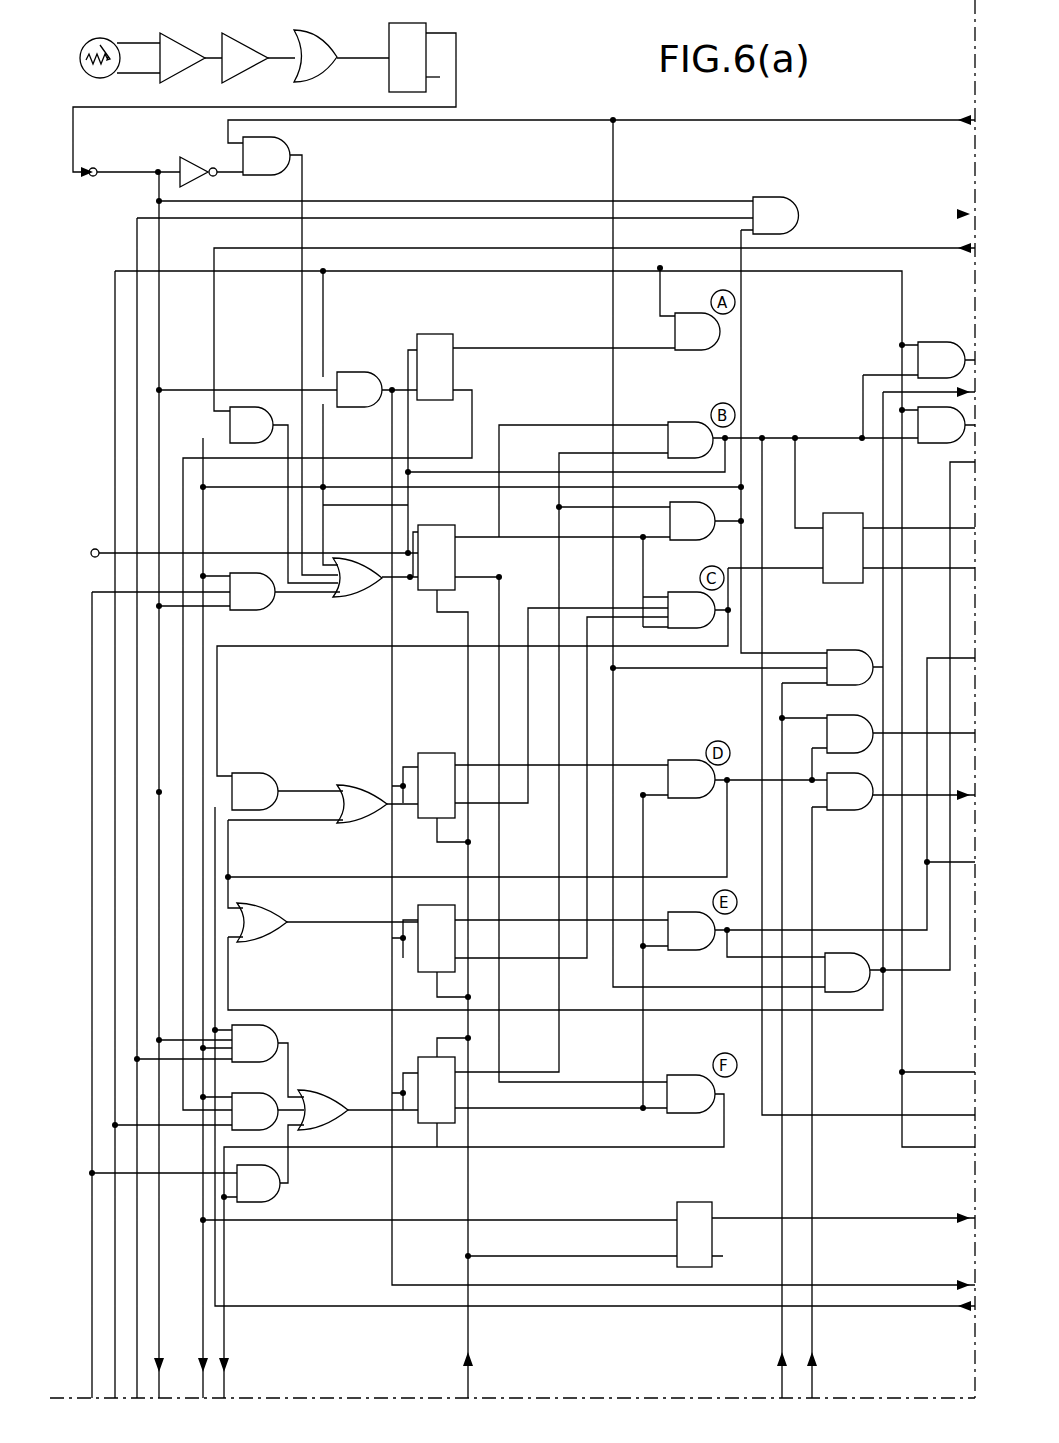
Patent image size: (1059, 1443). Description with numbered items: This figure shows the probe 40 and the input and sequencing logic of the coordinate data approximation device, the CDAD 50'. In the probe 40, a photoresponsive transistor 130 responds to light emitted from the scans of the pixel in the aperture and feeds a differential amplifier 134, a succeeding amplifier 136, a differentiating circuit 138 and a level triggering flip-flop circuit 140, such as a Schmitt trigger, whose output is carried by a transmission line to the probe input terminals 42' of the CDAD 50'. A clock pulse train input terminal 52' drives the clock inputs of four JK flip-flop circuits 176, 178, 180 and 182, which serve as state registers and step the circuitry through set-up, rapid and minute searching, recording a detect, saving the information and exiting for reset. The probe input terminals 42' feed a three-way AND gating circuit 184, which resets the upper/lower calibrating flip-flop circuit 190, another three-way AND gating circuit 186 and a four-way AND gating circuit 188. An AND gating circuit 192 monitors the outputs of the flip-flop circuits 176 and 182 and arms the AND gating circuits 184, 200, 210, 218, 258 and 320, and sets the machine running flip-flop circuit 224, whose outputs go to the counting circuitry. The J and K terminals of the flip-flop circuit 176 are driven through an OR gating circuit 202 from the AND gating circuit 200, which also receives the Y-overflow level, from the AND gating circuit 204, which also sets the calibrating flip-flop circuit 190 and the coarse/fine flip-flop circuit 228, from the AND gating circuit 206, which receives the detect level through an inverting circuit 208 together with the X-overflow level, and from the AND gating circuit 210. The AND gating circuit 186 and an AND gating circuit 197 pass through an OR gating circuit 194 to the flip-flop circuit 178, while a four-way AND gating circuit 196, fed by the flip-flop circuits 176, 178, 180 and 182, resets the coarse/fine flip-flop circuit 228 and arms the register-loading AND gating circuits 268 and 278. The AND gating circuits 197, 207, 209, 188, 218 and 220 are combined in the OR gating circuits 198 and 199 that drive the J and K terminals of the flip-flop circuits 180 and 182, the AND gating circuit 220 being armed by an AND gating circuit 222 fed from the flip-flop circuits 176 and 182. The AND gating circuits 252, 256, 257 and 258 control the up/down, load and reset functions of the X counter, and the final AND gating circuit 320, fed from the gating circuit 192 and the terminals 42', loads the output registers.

The photoresponsive transistor 130 is at (92, 46).
The differential amplifier 134 is at (190, 36).
The succeeding amplifier 136 is at (252, 36).
The differentiating circuit 138 is at (322, 52).
The level triggering flip-flop circuit 140 is at (389, 46).
The probe 40 is at (266, 108).
The CDAD 50' is at (492, 157).
The inverting circuit 208 is at (196, 156).
The AND gating circuit 206 is at (282, 142).
The probe input terminals 42' is at (100, 190).
The AND gating circuit 320 is at (776, 205).
The three-way AND gating circuit 184 is at (366, 368).
The upper/lower calibrating flip-flop circuit 190 is at (434, 337).
The two-way AND gating circuit 200 is at (230, 418).
The AND gating circuit 252 is at (712, 350).
The AND gating circuit 204 is at (700, 420).
The reset AND gating circuit 257 is at (918, 360).
The AND gating circuit 256 is at (943, 443).
The JK flip-flop circuit 176 is at (455, 520).
The AND gating circuit 192 is at (708, 540).
The four-way AND gating circuit 196 is at (700, 588).
The C/F bilateral flip-flop circuit 228 is at (860, 512).
The OR gating circuit 202 is at (350, 597).
The three-way AND gating circuit 210 is at (262, 610).
The clock pulse train input terminal 52' is at (97, 542).
The AND gating circuit 258 is at (860, 652).
The AND gating circuit 268 is at (866, 722).
The three-way AND gating circuit 186 is at (266, 782).
The OR gating circuit 194 is at (362, 792).
The JK flip-flop circuit 178 is at (455, 748).
The AND gating circuit 197 is at (700, 760).
The AND gating circuit 278 is at (834, 808).
The OR gating circuit 198 is at (266, 906).
The JK flip-flop circuit 180 is at (455, 902).
The AND gating circuit 209 is at (700, 914).
The AND gating circuit 207 is at (860, 966).
The four-way AND gating circuit 188 is at (266, 1038).
The JK flip-flop circuit 182 is at (434, 1052).
The AND gating circuit 222 is at (694, 1086).
The AND gating circuit 218 is at (268, 1090).
The OR gate 199 is at (336, 1102).
The AND gating circuit 220 is at (268, 1202).
The machine running bilateral flip-flop circuit 224 is at (694, 1214).